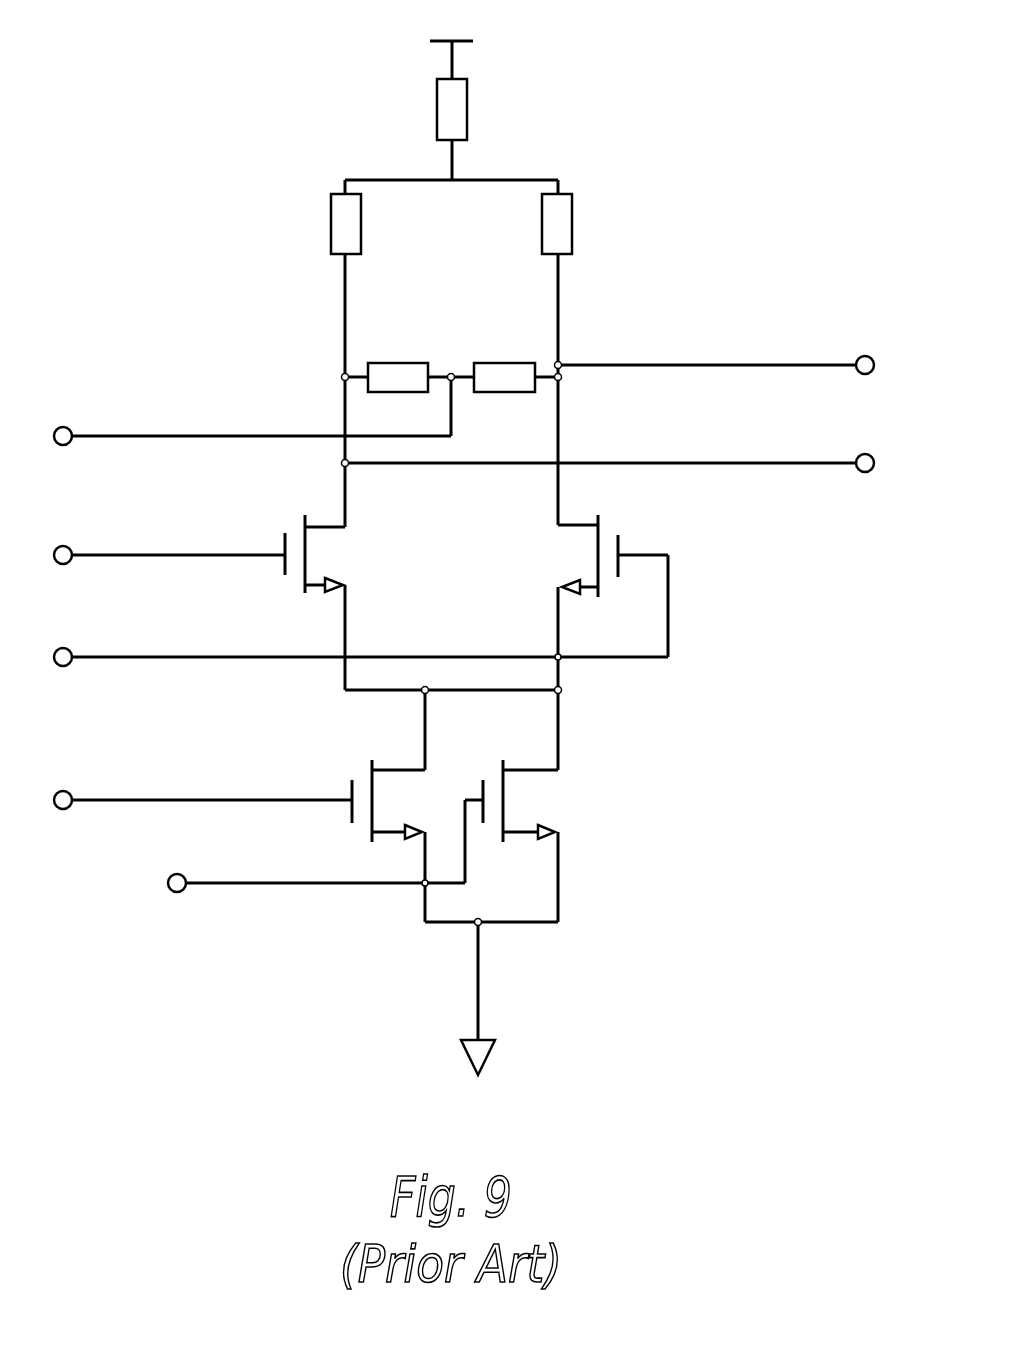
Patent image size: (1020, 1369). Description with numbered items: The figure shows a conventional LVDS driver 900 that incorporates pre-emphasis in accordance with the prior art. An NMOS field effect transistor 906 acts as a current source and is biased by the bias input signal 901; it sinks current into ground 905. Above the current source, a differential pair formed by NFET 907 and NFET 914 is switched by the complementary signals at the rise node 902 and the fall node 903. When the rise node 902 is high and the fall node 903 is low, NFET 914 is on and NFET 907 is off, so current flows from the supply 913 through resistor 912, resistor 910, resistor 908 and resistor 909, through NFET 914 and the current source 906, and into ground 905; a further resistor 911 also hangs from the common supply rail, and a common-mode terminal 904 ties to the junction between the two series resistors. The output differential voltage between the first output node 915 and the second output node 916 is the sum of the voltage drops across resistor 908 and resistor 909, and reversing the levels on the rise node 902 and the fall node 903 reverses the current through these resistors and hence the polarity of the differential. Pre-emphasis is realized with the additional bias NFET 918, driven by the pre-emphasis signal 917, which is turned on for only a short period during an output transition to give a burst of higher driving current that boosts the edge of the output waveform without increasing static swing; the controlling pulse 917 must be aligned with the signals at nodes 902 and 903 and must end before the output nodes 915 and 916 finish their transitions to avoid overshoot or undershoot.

The conventional LVDS driver 900 is at (849, 140).
The input signal NB 901 is at (103, 805).
The node RISE 902 is at (103, 662).
The node FALL 903 is at (102, 553).
The VCM input terminal 904 is at (103, 440).
The ground 905 is at (487, 1060).
The NMOS FET current source 906 is at (400, 787).
The NFET 907 is at (313, 588).
The resistor 908 is at (425, 362).
The resistor 909 is at (484, 362).
The resistor 910 is at (362, 226).
The resistor 911 is at (541, 226).
The resistor 912 is at (468, 108).
The supply 913 is at (452, 40).
The NFET 914 is at (583, 570).
The output node PADMN 915 is at (832, 368).
The output node PADMP 916 is at (832, 467).
The pre-emphasis signal 917 is at (215, 887).
The additional bias NFET 918 is at (528, 787).